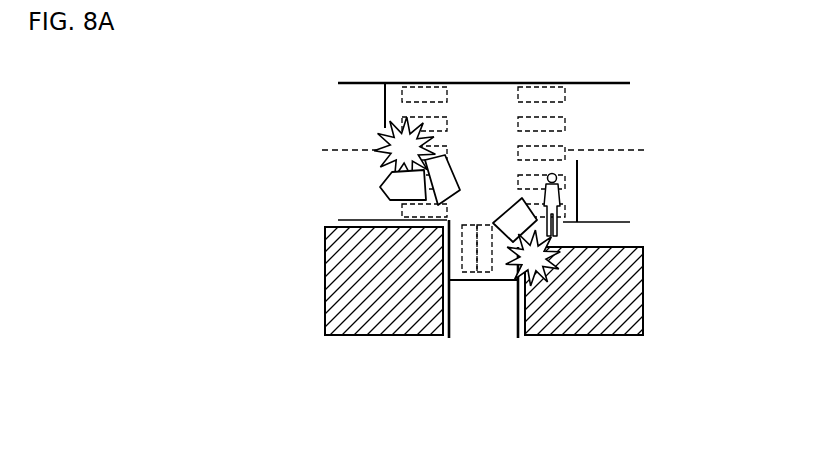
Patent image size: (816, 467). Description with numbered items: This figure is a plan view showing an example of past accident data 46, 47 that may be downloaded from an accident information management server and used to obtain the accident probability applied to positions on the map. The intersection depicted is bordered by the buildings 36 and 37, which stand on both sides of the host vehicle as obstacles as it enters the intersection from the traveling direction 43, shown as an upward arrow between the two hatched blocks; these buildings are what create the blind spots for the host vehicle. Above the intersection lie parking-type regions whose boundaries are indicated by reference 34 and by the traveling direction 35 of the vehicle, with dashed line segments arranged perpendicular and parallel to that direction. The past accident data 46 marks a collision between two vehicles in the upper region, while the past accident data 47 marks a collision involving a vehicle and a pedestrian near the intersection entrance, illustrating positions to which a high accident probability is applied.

The first parking area 34 is at (348, 115).
The traveling direction 35 is at (622, 187).
The building 36 is at (643, 296).
The building 37 is at (325, 290).
The traveling direction 43 is at (485, 346).
The past accident data 46 is at (368, 165).
The past accident data 47 is at (590, 188).